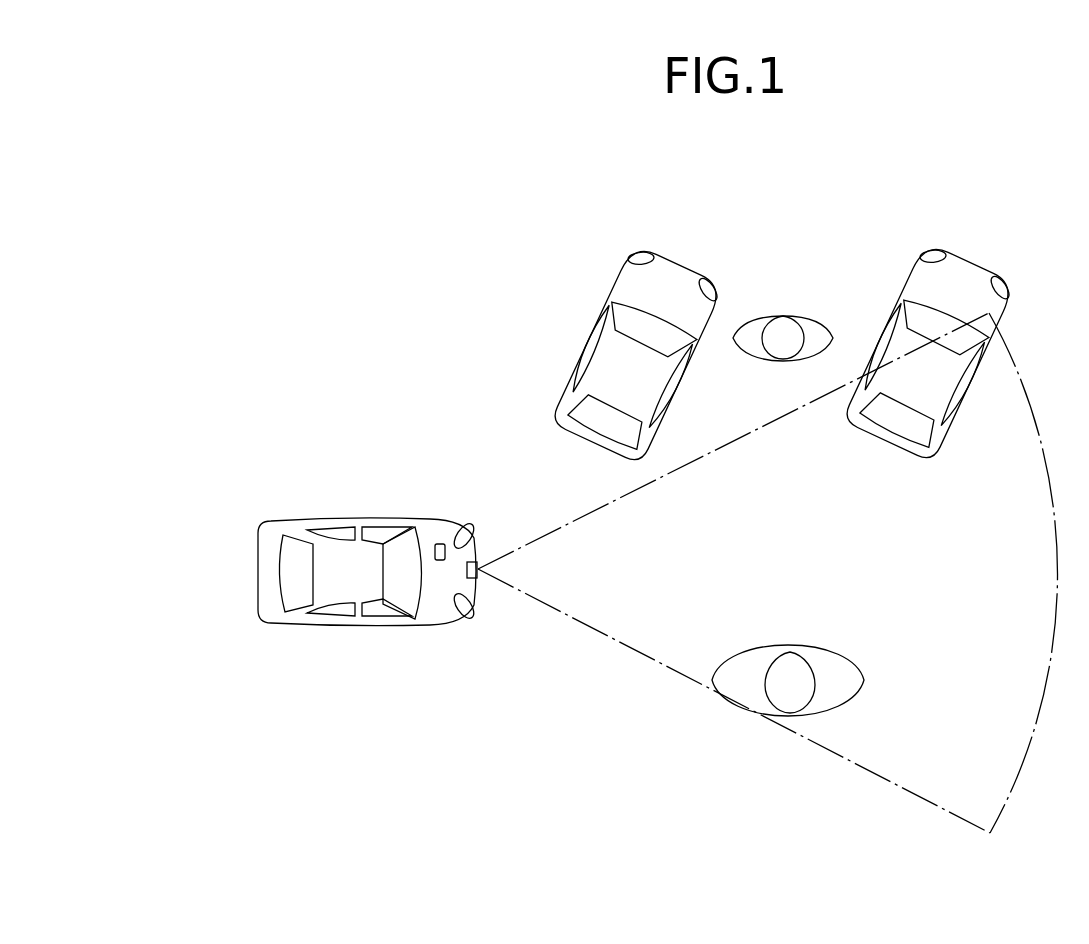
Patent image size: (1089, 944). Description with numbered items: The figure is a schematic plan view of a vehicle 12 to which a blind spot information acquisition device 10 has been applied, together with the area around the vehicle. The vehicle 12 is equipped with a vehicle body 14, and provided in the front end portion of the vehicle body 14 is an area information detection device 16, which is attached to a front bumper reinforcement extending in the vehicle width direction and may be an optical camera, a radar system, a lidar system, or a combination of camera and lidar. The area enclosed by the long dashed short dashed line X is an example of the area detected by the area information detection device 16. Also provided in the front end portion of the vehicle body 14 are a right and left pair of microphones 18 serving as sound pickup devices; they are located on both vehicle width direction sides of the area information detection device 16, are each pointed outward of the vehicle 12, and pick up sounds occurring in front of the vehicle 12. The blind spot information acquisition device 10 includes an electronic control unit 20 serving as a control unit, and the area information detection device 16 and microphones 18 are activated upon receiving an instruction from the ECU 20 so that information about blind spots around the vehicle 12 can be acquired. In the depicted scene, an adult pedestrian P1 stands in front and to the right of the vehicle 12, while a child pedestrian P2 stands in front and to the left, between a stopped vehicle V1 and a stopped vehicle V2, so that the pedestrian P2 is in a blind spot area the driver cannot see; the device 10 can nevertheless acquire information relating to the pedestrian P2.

The blind spot information acquisition device 10 is at (408, 492).
The vehicle 12 is at (258, 455).
The vehicle body 14 is at (331, 521).
The area information detection device 16 is at (473, 588).
The microphones 18 is at (461, 525).
The electronic control unit (ECU) 20 is at (438, 544).
The stopped vehicle V1 is at (618, 274).
The stopped vehicle V2 is at (907, 272).
The adult pedestrian P1 is at (826, 718).
The child pedestrian P2 is at (806, 316).
The long dashed short dashed line X is at (642, 660).